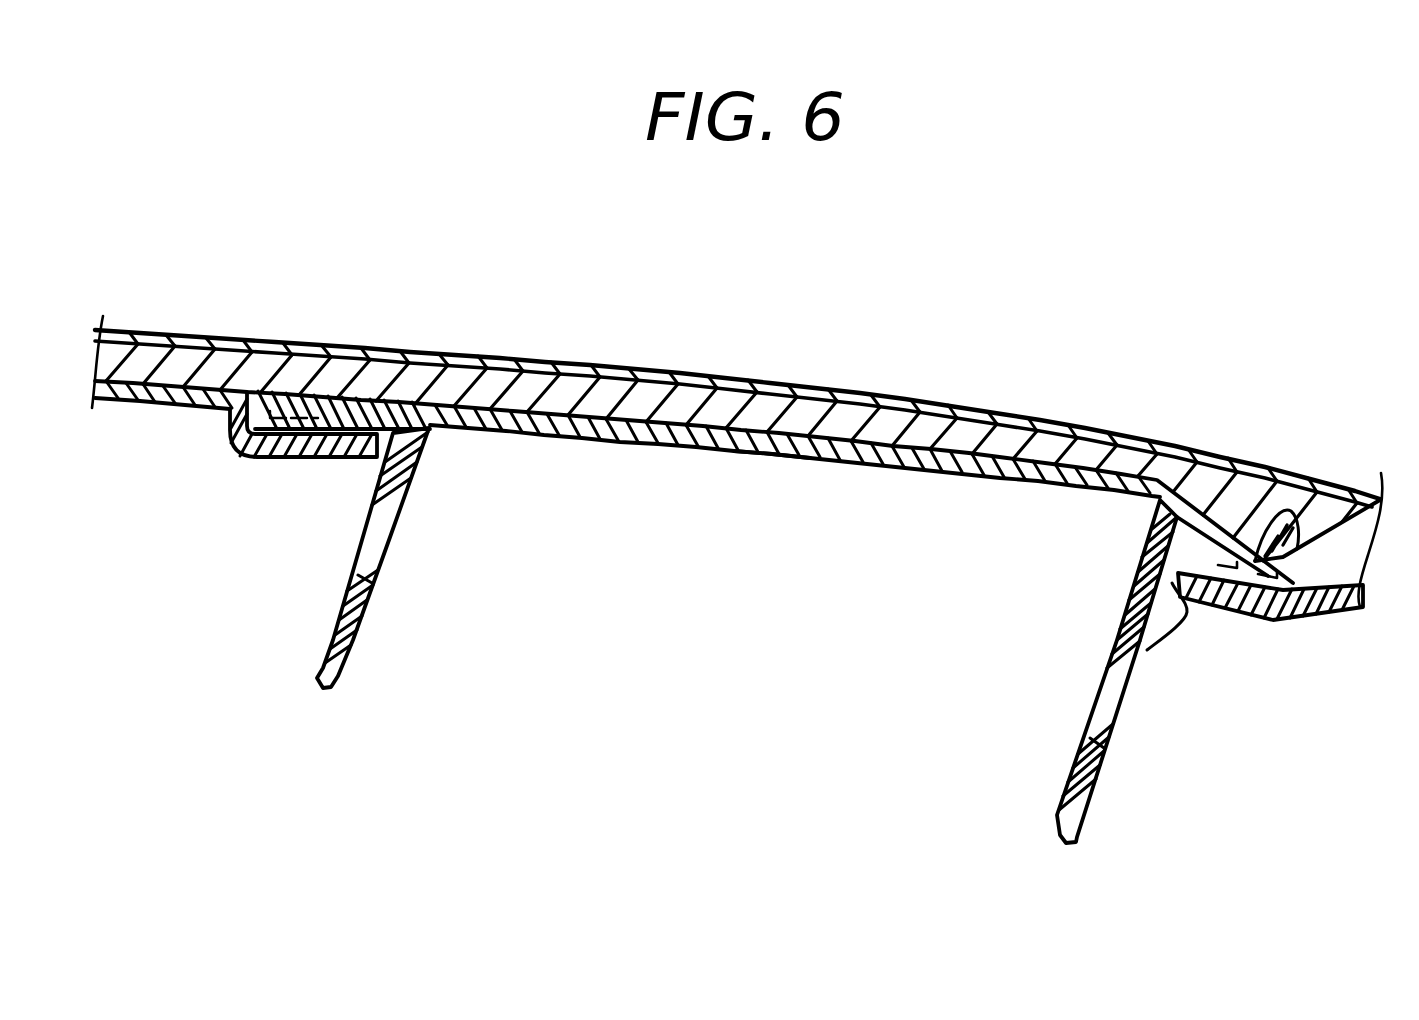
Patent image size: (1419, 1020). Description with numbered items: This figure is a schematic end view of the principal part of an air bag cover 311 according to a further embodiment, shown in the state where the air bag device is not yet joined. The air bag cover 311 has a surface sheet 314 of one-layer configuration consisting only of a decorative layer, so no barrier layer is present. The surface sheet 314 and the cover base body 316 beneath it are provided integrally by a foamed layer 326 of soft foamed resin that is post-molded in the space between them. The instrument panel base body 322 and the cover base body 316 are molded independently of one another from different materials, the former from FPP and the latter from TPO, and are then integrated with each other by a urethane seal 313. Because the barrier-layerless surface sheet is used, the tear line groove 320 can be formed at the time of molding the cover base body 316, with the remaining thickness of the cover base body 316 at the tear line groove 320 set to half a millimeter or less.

The air bag cover 311 is at (1218, 448).
The urethane seal 313 is at (300, 432).
The surface sheet 314 is at (857, 398).
The cover base body 316 is at (566, 430).
The tear line groove 320 is at (786, 452).
The instrument panel base body 322 is at (1250, 620).
The foamed layer 326 is at (318, 362).